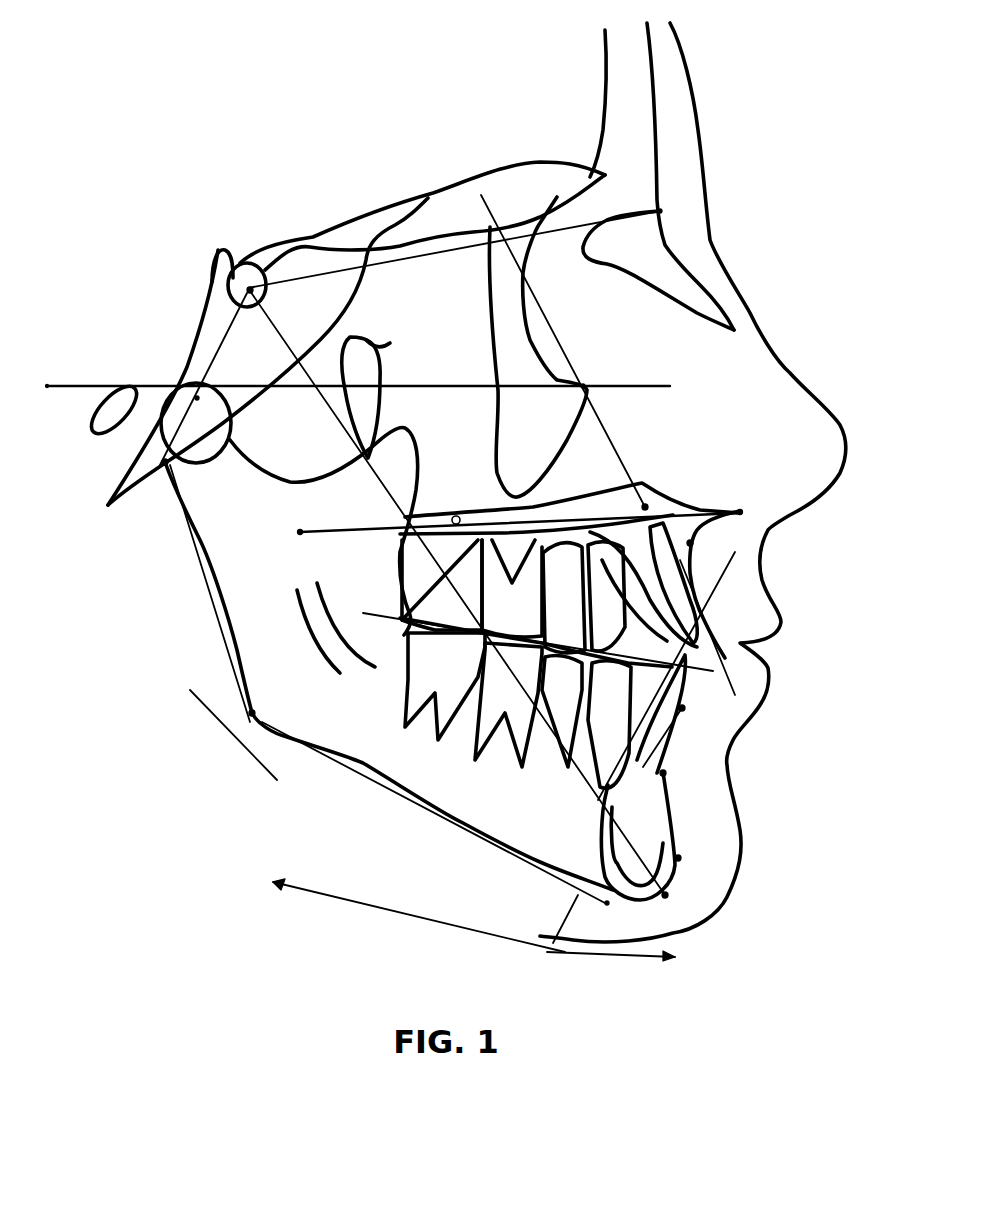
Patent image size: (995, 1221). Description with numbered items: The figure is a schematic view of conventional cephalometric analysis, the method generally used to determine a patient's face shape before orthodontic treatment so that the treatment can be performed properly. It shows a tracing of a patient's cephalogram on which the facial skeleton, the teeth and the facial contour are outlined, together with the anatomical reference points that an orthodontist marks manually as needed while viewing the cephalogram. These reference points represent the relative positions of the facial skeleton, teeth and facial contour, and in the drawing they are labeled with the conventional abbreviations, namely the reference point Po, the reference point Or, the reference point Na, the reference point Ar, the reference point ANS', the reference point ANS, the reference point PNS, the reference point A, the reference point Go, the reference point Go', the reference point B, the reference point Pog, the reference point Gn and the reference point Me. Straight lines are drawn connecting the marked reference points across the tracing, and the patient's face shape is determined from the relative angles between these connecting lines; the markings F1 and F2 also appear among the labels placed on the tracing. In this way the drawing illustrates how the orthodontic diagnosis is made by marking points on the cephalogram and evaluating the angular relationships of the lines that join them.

The porion Po is at (92, 369).
The orbitale Or is at (599, 369).
The nasion Na is at (679, 213).
The articulare Ar is at (190, 470).
The projected anterior nasal spine point ANS' is at (678, 481).
The anterior nasal spine ANS is at (745, 496).
The posterior nasal spine PNS is at (337, 516).
The A point (subspinale) A is at (704, 541).
The gonion Go is at (280, 706).
The constructed gonion Go' is at (233, 735).
The B point (supramentale) B is at (677, 773).
The pogonion Pog is at (705, 858).
The gnathion Gn is at (689, 905).
The menton Me is at (603, 918).
The first facial reference line F1 is at (401, 915).
The second facial reference line F2 is at (631, 971).